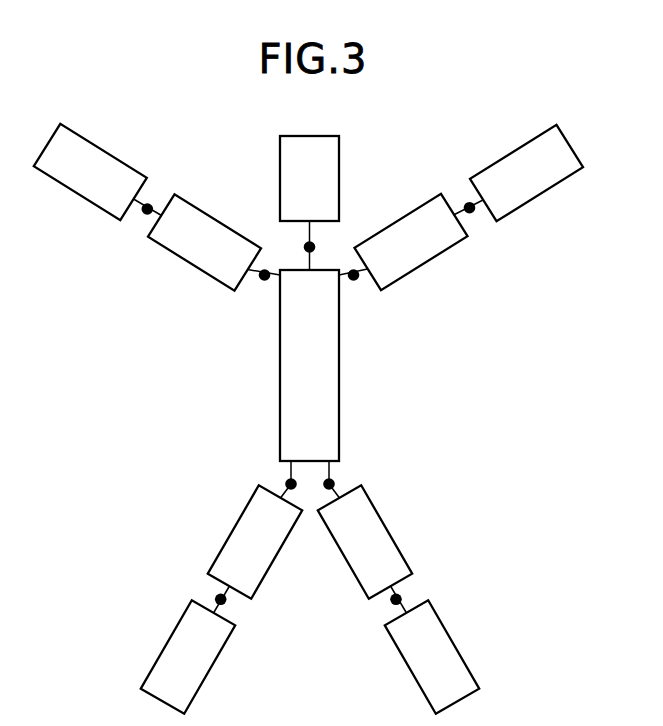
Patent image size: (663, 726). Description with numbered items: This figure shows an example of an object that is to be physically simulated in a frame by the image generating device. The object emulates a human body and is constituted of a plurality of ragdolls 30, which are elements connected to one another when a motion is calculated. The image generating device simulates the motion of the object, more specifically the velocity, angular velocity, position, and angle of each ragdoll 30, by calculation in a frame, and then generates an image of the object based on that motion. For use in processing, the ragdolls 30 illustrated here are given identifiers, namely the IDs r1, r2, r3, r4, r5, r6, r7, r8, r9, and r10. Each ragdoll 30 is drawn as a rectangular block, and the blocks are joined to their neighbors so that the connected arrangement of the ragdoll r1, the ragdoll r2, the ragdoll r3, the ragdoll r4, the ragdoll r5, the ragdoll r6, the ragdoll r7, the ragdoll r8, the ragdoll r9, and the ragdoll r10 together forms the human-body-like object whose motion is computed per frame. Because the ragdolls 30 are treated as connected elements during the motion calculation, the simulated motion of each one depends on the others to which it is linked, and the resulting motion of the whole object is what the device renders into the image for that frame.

The ragdoll 30 is at (339, 163).
The ragdoll ID r1 is at (309, 178).
The ragdoll ID r2 is at (309, 365).
The ragdoll ID r3 is at (204, 242).
The ragdoll ID r4 is at (90, 172).
The ragdoll ID r5 is at (411, 242).
The ragdoll ID r6 is at (526, 173).
The ragdoll ID r7 is at (255, 541).
The ragdoll ID r8 is at (188, 656).
The ragdoll ID r9 is at (365, 541).
The ragdoll ID r10 is at (432, 656).